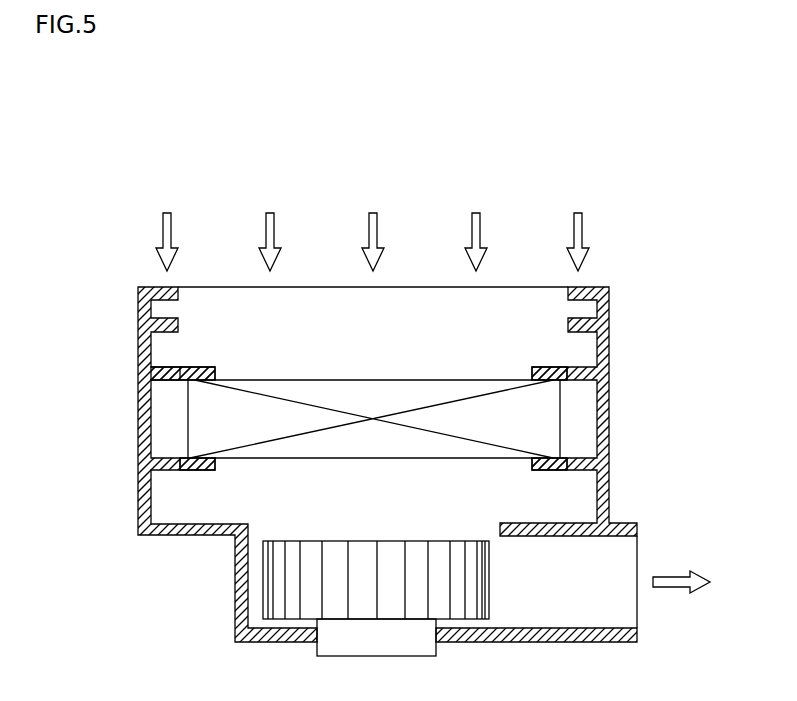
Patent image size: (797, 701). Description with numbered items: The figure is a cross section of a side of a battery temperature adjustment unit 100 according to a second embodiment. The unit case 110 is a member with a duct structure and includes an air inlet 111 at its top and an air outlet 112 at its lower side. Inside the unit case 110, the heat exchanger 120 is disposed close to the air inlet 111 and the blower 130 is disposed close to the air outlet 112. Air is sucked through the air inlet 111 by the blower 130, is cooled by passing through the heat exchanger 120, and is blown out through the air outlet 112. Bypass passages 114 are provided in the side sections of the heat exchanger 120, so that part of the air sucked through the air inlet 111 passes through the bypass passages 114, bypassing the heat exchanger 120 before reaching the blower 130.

The battery temperature adjustment unit 100 is at (137, 333).
The unit case 110 is at (609, 420).
The air inlet 111 is at (510, 287).
The air outlet 112 is at (637, 607).
The bypass passages 114 is at (170, 367).
The heat exchanger 120 is at (347, 380).
The blower 130 is at (489, 588).